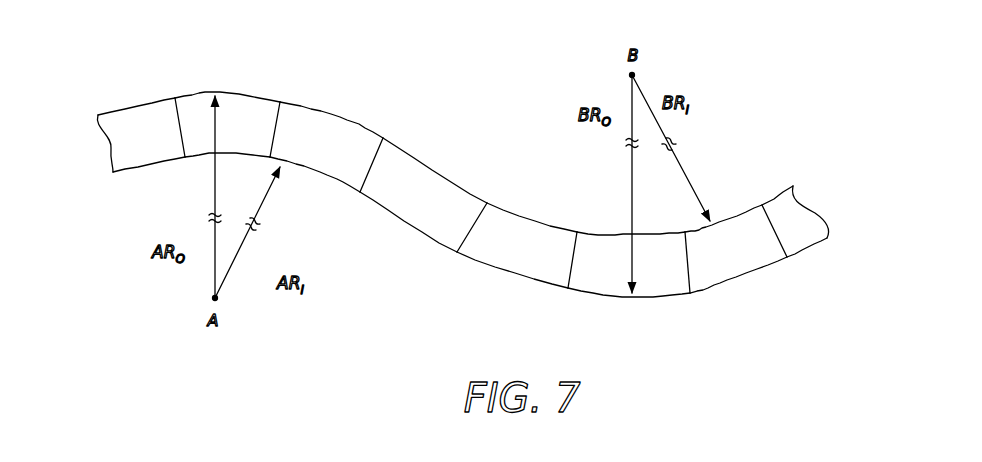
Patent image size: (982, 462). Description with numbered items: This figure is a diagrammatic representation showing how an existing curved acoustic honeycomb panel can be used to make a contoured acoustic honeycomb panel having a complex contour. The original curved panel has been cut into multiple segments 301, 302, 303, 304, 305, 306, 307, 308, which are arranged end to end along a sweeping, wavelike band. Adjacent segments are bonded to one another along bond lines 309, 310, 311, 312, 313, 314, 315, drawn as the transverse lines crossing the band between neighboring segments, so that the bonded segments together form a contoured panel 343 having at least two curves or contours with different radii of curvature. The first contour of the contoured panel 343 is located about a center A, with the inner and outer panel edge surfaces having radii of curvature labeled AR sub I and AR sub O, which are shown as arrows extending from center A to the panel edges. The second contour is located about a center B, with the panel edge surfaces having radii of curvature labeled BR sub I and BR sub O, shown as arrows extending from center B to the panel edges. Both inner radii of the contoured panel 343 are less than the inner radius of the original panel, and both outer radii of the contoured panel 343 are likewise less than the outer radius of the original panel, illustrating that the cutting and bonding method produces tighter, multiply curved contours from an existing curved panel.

The segment 301 is at (128, 137).
The segment 302 is at (197, 110).
The segment 303 is at (307, 133).
The segment 304 is at (400, 157).
The segment 305 is at (502, 220).
The segment 306 is at (600, 268).
The segment 307 is at (730, 232).
The segment 308 is at (803, 242).
The bond line 309 is at (177, 118).
The bond line 310 is at (275, 118).
The bond line 311 is at (373, 158).
The bond line 312 is at (482, 203).
The bond line 313 is at (573, 257).
The bond line 314 is at (690, 268).
The bond line 315 is at (787, 250).
The contoured panel 343 is at (461, 184).